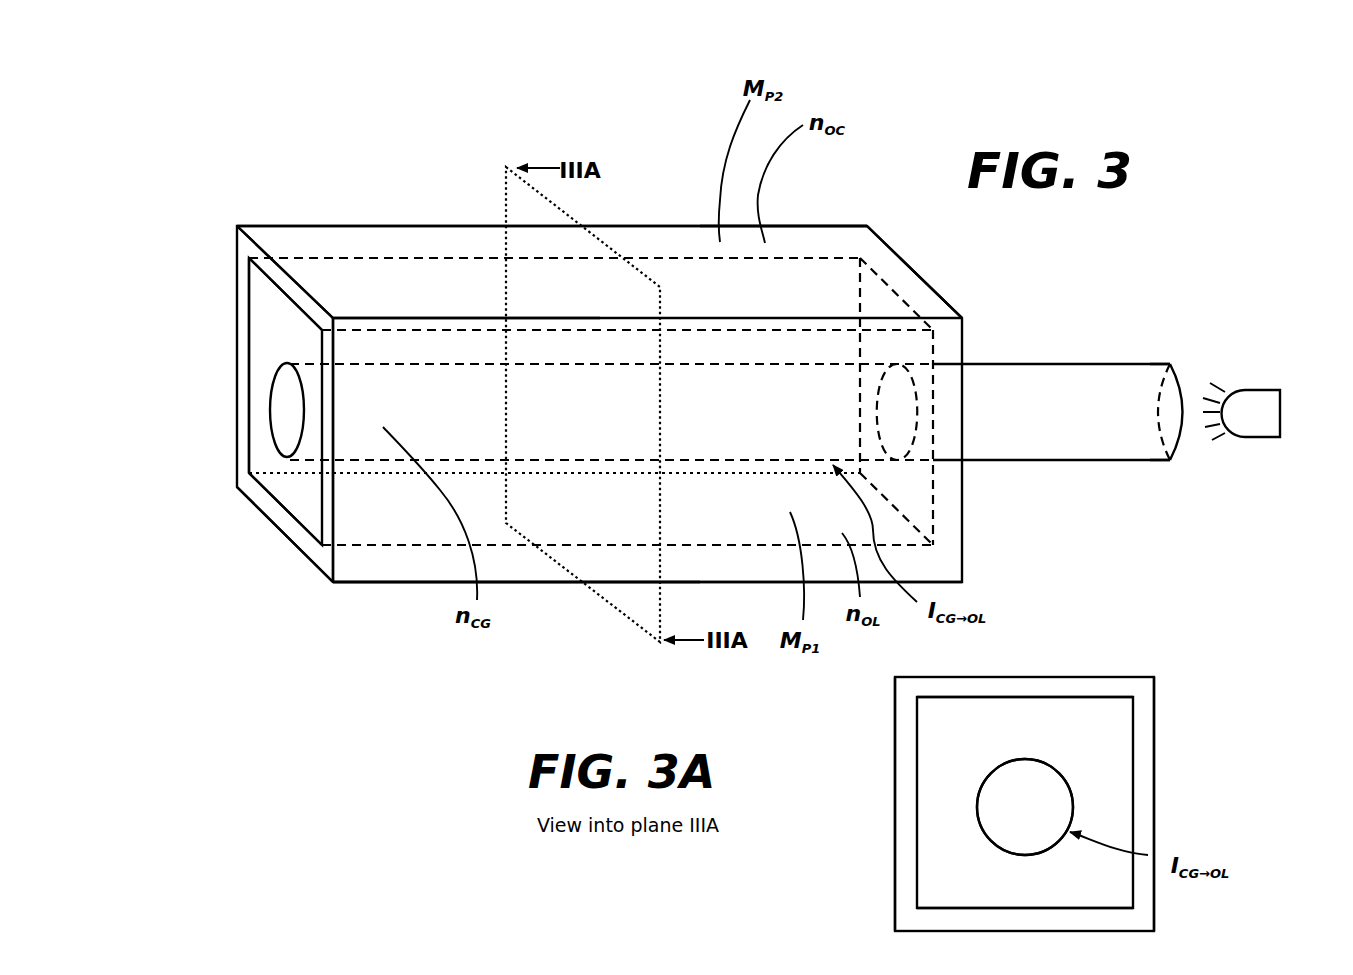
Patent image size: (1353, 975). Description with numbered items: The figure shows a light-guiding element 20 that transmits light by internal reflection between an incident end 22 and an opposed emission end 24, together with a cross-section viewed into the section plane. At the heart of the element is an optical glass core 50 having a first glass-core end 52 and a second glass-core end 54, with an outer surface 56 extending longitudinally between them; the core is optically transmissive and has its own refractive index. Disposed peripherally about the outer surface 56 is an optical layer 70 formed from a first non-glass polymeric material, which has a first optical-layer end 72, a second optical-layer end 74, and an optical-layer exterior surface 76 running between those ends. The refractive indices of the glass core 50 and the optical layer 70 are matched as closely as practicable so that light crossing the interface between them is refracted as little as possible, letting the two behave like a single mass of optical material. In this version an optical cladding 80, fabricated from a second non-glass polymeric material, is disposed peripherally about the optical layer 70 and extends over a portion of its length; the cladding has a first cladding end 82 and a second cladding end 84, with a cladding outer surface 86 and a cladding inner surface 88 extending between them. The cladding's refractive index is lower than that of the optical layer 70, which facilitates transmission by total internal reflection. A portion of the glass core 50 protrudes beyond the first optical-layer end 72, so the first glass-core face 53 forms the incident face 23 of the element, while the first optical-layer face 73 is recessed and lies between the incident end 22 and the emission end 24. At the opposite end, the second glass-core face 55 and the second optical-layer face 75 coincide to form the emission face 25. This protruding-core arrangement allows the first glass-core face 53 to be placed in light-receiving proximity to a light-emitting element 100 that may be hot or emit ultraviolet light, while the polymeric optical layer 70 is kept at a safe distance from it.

In FIG. 3, the light-guiding element 20 is at (697, 188).
In FIG. 3A, the light-guiding element 20 is at (1167, 777).
In FIG. 3, the incident end 22 is at (1160, 468).
In FIG. 3, the incident face 23 is at (1173, 399).
In FIG. 3, the emission end 24 is at (345, 583).
In FIG. 3, the emission face 25 is at (263, 452).
In FIG. 3, the optical glass core 50 is at (688, 418).
In FIG. 3A, the optical glass core 50 is at (1005, 791).
In FIG. 3, the first glass-core end 52 is at (1140, 444).
In FIG. 3, the first glass-core face 53 is at (1167, 452).
In FIG. 3, the second glass-core end 54 is at (303, 362).
In FIG. 3, the second glass-core face 55 is at (287, 420).
In FIG. 3, the outer surface of the glass core 56 is at (1050, 461).
In FIG. 3A, the outer surface of the glass core 56 is at (977, 812).
In FIG. 3, the optical layer 70 is at (453, 294).
In FIG. 3A, the optical layer 70 is at (978, 727).
In FIG. 3, the first optical-layer end 72 is at (838, 258).
In FIG. 3, the first optical-layer face 73 is at (879, 298).
In FIG. 3, the second optical-layer end 74 is at (315, 288).
In FIG. 3, the second optical-layer face 75 is at (305, 505).
In FIG. 3, the optical-layer exterior surface 76 is at (397, 291).
In FIG. 3A, the optical-layer exterior surface 76 is at (915, 885).
In FIG. 3, the optical cladding 80 is at (523, 583).
In FIG. 3A, the optical cladding 80 is at (905, 718).
In FIG. 3, the first cladding end 82 is at (937, 302).
In FIG. 3, the second cladding end 84 is at (257, 503).
In FIG. 3, the cladding outer surface 86 is at (552, 583).
In FIG. 3A, the cladding outer surface 86 is at (1077, 677).
In FIG. 3, the cladding inner surface 88 is at (430, 540).
In FIG. 3A, the cladding inner surface 88 is at (1032, 680).
In FIG. 3, the light-emitting element 100 is at (1250, 410).